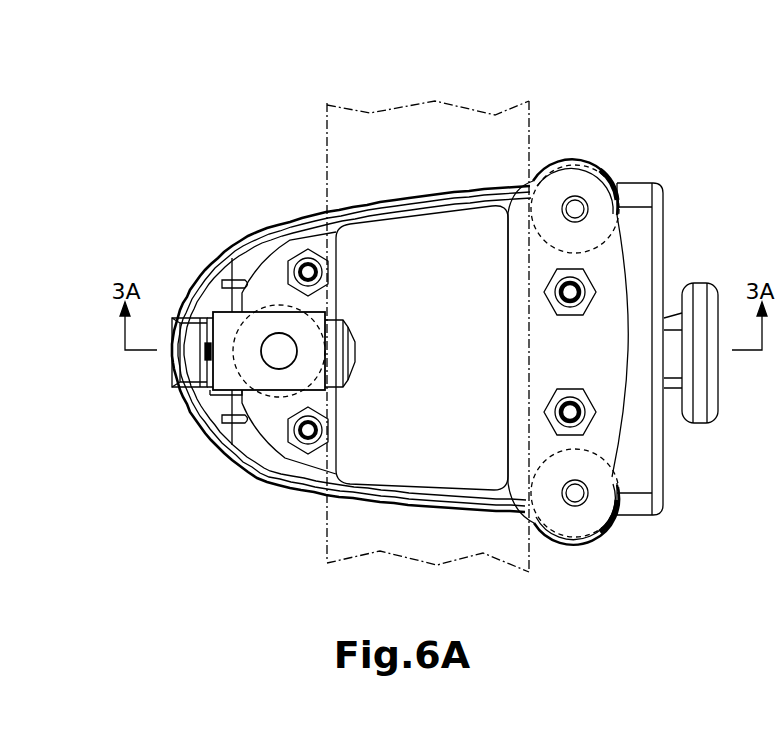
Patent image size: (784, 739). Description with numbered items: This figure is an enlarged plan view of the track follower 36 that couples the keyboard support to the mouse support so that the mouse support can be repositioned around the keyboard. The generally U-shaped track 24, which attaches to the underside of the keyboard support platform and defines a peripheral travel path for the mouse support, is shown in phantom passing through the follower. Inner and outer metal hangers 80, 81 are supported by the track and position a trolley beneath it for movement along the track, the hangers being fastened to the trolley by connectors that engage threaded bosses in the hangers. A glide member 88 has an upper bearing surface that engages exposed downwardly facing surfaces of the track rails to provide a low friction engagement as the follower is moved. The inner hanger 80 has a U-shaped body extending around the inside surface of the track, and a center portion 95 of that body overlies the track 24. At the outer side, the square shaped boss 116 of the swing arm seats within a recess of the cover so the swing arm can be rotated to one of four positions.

The track 24 is at (468, 135).
The follower mechanism 36 is at (179, 421).
The inner hanger 80 is at (276, 278).
The outer hanger 81 is at (612, 293).
The glide member 88 is at (420, 438).
The center portion 95 is at (262, 377).
The square shaped boss 116 is at (673, 372).